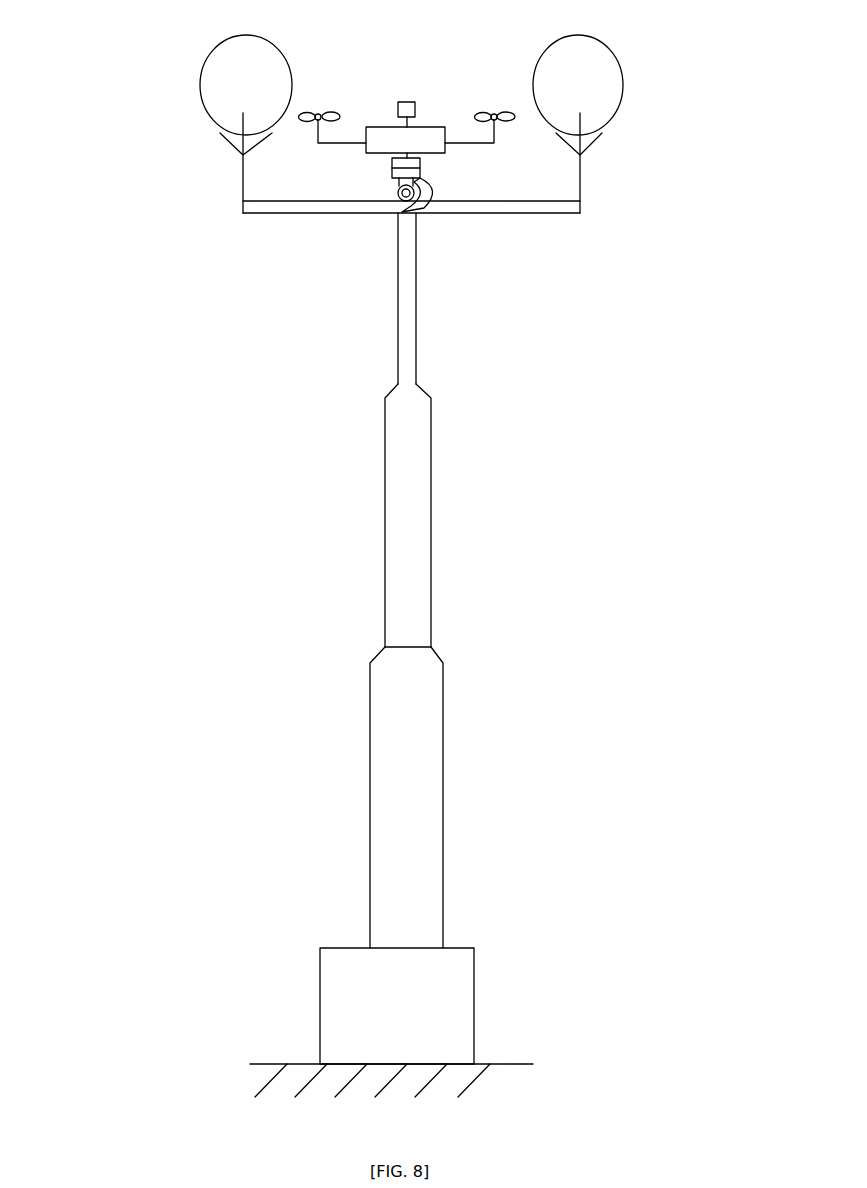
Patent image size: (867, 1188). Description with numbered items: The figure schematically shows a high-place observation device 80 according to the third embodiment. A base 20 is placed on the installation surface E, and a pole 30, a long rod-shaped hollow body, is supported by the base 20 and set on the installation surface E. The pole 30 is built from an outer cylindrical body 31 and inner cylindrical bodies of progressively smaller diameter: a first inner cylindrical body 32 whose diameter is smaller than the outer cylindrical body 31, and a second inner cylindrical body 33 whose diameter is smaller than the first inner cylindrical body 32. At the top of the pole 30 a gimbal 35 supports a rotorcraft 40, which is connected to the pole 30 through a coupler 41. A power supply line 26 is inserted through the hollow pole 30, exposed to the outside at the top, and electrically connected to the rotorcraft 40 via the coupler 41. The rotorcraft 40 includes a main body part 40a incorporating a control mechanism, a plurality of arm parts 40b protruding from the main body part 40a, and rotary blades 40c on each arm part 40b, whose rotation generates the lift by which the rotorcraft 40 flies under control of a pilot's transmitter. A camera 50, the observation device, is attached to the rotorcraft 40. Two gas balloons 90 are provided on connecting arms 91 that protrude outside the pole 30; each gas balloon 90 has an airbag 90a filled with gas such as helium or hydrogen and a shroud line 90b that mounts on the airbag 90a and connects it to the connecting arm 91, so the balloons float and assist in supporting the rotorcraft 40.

The base 20 is at (480, 1000).
The power supply line 26 is at (432, 183).
The pole 30 is at (477, 580).
The outer cylindrical body 31 is at (418, 755).
The first inner cylindrical body 32 is at (405, 595).
The second inner cylindrical body 33 is at (417, 333).
The gimbal 35 is at (398, 195).
The rotorcraft 40 is at (418, 109).
The main body part 40a is at (430, 143).
The arm part 40b is at (333, 143).
The rotary blade 40c is at (332, 112).
The coupler 41 is at (392, 168).
The camera 50 is at (407, 102).
The high-place observation device 80 is at (484, 655).
The gas balloon 90 is at (422, 119).
The airbag 90a is at (218, 75).
The shroud line 90b is at (232, 143).
The connecting arm 91 is at (315, 215).
The installation surface E is at (262, 1062).